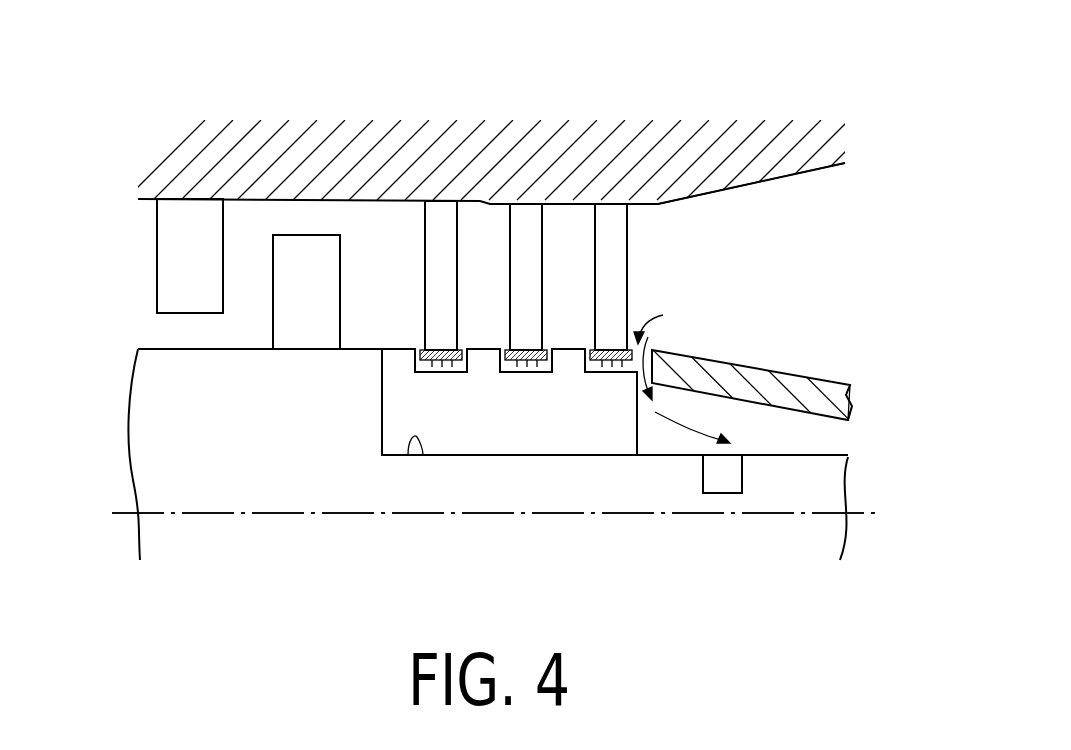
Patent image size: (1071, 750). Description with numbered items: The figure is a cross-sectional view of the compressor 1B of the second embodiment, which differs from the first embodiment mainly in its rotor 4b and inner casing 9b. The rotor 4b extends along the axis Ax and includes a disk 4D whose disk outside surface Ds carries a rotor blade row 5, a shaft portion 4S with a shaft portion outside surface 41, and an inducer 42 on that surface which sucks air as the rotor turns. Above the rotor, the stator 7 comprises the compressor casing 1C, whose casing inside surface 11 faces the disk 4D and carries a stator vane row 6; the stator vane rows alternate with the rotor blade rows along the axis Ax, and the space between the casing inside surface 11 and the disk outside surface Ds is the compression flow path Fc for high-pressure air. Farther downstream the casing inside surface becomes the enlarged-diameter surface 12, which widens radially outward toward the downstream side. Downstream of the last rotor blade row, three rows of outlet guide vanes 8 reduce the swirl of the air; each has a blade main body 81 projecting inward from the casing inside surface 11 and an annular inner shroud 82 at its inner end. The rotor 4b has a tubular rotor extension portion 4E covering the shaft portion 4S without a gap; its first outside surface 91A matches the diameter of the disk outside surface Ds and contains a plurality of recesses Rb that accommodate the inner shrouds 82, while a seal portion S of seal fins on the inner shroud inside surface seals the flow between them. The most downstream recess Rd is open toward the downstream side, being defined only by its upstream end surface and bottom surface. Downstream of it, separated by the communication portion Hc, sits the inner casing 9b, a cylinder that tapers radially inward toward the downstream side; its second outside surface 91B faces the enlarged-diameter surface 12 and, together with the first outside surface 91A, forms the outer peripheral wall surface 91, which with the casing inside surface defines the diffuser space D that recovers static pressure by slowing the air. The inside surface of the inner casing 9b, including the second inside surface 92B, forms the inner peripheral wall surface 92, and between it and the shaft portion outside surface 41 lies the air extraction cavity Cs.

The compressor 1B is at (86, 108).
The stator 7 is at (98, 199).
The casing inside surface 11 is at (253, 216).
The enlarged-diameter surface 12 is at (813, 182).
The compressor casing 1C is at (723, 145).
The diffuser space D is at (754, 205).
The stator vane row 6 is at (163, 255).
The compression flow path Fc is at (228, 292).
The rotor blade row 5 is at (314, 252).
The outlet guide vanes 8 is at (450, 200).
The blade main body 81 is at (438, 245).
The inner shroud 82 is at (423, 360).
The rotor 4b is at (138, 398).
The disk outside surface Ds is at (177, 348).
The disk 4D is at (262, 417).
The rotor extension portion 4E is at (530, 445).
The shaft portion outside surface 41 is at (412, 455).
The shaft portion 4S is at (482, 492).
The axis Ax is at (476, 517).
The seal portion S is at (426, 374).
The recess Rb is at (472, 348).
The recess Rd is at (602, 382).
The outer peripheral wall surface 91 is at (740, 326).
The first outside surface 91A is at (570, 350).
The second outside surface 91B is at (785, 347).
The inner casing 9b is at (837, 390).
The inner peripheral wall surface 92 is at (877, 430).
The second inside surface 92B is at (810, 418).
The communication portion Hc is at (682, 362).
The inducer 42 is at (730, 488).
The air extraction cavity Cs is at (785, 437).